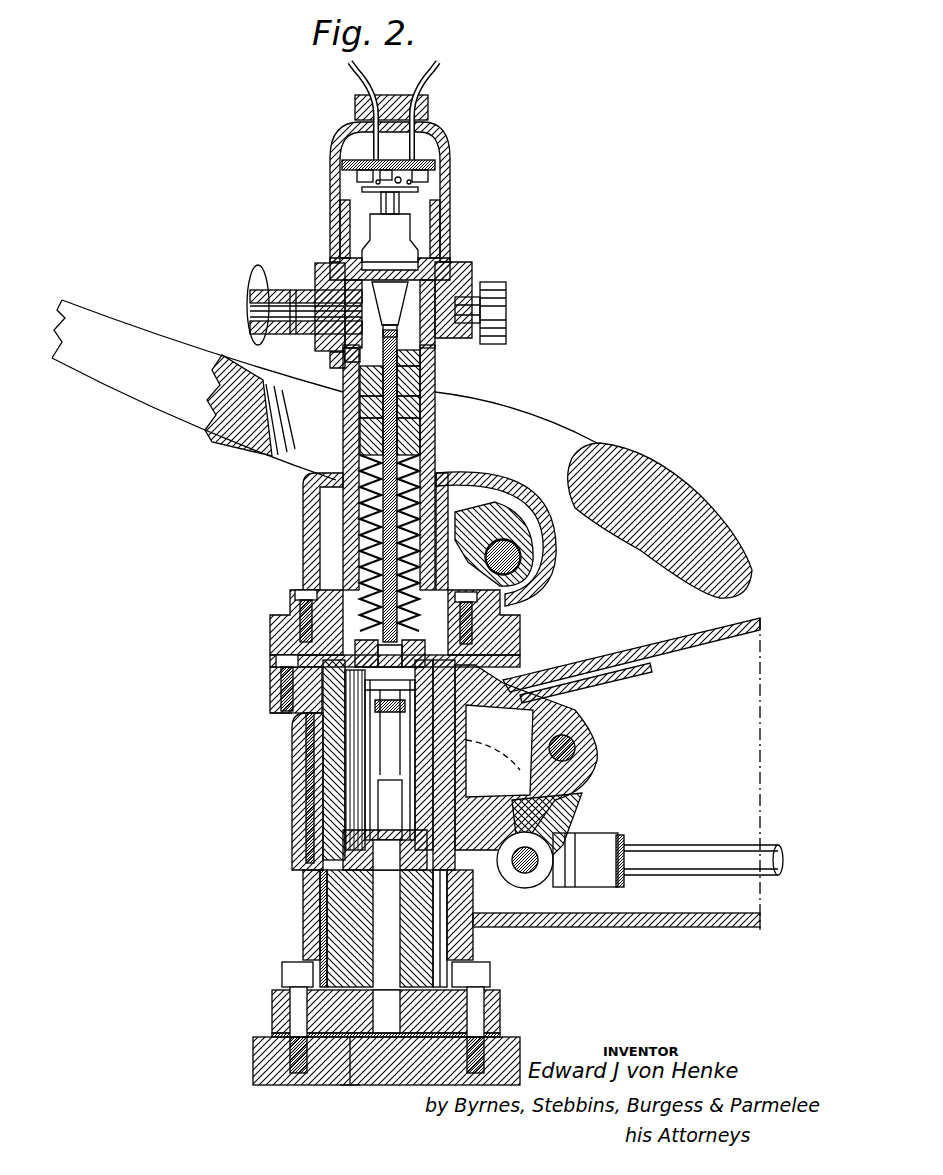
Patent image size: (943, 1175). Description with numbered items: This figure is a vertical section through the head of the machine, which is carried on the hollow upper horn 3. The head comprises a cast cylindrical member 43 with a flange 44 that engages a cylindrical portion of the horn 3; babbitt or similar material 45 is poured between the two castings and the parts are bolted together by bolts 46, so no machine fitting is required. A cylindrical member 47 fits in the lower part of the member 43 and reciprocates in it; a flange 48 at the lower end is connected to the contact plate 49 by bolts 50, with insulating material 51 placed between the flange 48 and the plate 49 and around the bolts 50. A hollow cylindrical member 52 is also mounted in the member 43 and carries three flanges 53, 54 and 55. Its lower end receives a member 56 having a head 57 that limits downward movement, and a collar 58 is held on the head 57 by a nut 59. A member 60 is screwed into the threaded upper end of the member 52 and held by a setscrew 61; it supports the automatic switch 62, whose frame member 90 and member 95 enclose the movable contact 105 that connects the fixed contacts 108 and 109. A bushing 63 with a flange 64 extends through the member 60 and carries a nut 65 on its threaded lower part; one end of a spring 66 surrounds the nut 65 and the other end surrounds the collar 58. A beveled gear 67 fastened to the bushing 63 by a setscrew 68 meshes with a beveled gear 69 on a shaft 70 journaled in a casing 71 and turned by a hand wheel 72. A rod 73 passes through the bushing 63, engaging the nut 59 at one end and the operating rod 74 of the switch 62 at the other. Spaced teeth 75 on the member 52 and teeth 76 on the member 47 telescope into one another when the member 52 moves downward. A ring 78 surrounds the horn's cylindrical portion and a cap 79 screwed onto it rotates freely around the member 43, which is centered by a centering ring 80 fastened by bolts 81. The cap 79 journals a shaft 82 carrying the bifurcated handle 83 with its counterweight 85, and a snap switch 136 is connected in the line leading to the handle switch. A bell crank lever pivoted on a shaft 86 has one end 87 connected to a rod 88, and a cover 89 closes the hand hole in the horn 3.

The upper horn 3 is at (616, 774).
The cylindrical member 43 is at (322, 779).
The flange 44 is at (276, 660).
The babbitt material 45 is at (306, 793).
The bolts 46 is at (280, 682).
The cylindrical member 47 is at (278, 704).
The flange 48 is at (280, 1002).
The contact plate 49 is at (258, 1056).
The bolts 50 is at (298, 975).
The insulating material 51 is at (348, 1086).
The cylindrical member 52 is at (342, 555).
The flange 53 is at (458, 746).
The flange 54 is at (506, 658).
The flange 55 is at (474, 532).
The member 56 is at (390, 760).
The head 57 is at (292, 726).
The collar 58 is at (358, 648).
The nut 59 is at (406, 649).
The member 60 is at (435, 369).
The setscrew 61 is at (435, 382).
The automatic switch 62 is at (400, 153).
The bushing 63 is at (428, 399).
The flange 64 is at (427, 419).
The nut 65 is at (428, 440).
The spring 66 is at (432, 463).
The beveled gear 67 is at (329, 367).
The setscrew 68 is at (403, 337).
The beveled gear 69 is at (318, 350).
The shaft 70 is at (258, 309).
The casing 71 is at (318, 279).
The hand wheel 72 is at (258, 273).
The rod 73 is at (350, 405).
The operating rod 74 is at (418, 300).
The teeth 75 is at (350, 760).
The teeth 76 is at (390, 810).
The ring 78 is at (280, 634).
The cap 79 is at (303, 580).
The centering ring 80 is at (296, 594).
The bolts 81 is at (292, 613).
The shaft 82 is at (521, 566).
The bifurcated handle 83 is at (131, 383).
The counterweight 85 is at (690, 498).
The shaft 86 is at (597, 747).
The bell crank end 87 is at (578, 822).
The rod 88 is at (705, 852).
The cover 89 is at (598, 657).
The frame member 90 is at (438, 266).
The member 95 is at (390, 227).
The contact 105 is at (420, 194).
The fixed contact 108 is at (430, 183).
The fixed contact 109 is at (355, 178).
The snap switch 136 is at (496, 315).